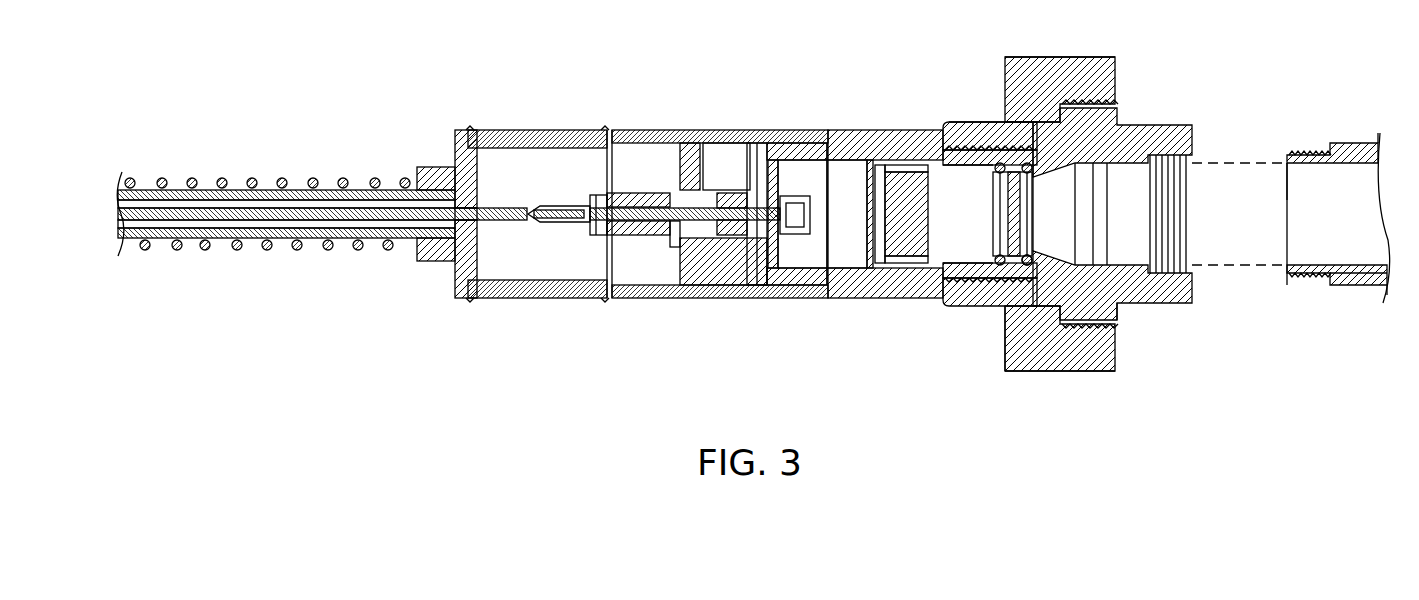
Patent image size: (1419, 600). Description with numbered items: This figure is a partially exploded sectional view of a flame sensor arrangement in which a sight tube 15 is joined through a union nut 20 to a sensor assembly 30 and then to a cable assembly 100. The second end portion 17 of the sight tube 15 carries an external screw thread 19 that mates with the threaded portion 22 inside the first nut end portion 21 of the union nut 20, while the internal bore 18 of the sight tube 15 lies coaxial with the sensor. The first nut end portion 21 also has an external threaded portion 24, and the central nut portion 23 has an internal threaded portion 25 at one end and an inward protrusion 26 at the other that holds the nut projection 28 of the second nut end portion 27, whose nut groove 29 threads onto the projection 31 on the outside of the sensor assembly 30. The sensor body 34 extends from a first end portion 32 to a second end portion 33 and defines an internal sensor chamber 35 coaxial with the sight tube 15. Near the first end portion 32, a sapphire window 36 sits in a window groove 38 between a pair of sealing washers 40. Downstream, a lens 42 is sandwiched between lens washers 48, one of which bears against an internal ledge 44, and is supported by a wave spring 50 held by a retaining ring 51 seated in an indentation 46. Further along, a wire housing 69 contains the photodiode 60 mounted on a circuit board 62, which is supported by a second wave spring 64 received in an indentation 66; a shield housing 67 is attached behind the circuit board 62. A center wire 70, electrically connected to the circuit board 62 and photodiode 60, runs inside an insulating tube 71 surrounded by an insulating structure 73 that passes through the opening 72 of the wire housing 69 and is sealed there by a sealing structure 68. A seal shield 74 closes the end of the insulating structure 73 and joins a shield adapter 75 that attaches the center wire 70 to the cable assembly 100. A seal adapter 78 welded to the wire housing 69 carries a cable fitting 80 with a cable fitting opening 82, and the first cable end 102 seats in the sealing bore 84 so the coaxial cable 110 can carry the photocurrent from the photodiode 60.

The sight tube 15 is at (1360, 143).
The second end portion 17 is at (1287, 178).
The internal bore 18 is at (1368, 270).
The screw thread 19 is at (1300, 285).
The union nut 20 is at (1070, 57).
The first nut end portion 21 is at (1178, 125).
The threaded portion 22 is at (1193, 162).
The central nut portion 23 is at (1110, 57).
The external threaded portion 24 is at (1118, 312).
The internal threaded portion 25 is at (1097, 330).
The inward protrusion 26 is at (1007, 130).
The second nut end portion 27 is at (931, 148).
The nut projection 28 is at (1040, 330).
The nut groove 29 is at (985, 135).
The sensor assembly 30 is at (752, 59).
The projection 31 is at (968, 150).
The first end portion 32 is at (1033, 157).
The second end portion 33 is at (705, 142).
The sensor body 34 is at (790, 298).
The internal sensor chamber 35 is at (847, 172).
The window 36 is at (1010, 240).
The window groove 38 is at (996, 172).
The sealing washers 40 is at (1027, 266).
The lens 42 is at (915, 265).
The internal ledge 44 is at (882, 175).
The indentation 46 is at (876, 270).
The lens washers 48 is at (870, 185).
The wave spring 50 is at (880, 224).
The retaining ring 51 is at (860, 264).
The photodiode 60 is at (795, 200).
The circuit board 62 is at (760, 145).
The wave spring 64 is at (800, 150).
The indentation 66 is at (772, 268).
The shield housing 67 is at (740, 236).
The sealing structure 68 is at (672, 248).
The wire housing 69 is at (628, 130).
The center wire 70 is at (700, 250).
The insulating tube 71 is at (662, 210).
The opening 72 is at (688, 185).
The insulating structure 73 is at (652, 237).
The seal shield 74 is at (592, 205).
The shield adapter 75 is at (546, 226).
The seal adapter 78 is at (491, 130).
The cable fitting 80 is at (455, 268).
The cable fitting opening 82 is at (476, 212).
The sealing bore 84 is at (427, 230).
The cable assembly 100 is at (178, 264).
The first cable end 102 is at (419, 178).
The coaxial cable 110 is at (308, 206).